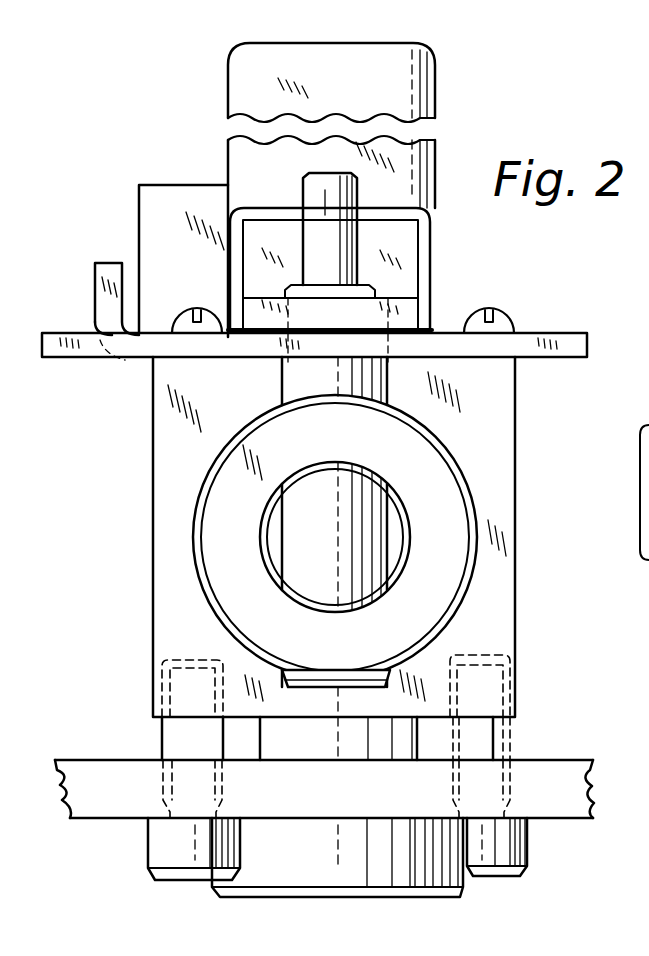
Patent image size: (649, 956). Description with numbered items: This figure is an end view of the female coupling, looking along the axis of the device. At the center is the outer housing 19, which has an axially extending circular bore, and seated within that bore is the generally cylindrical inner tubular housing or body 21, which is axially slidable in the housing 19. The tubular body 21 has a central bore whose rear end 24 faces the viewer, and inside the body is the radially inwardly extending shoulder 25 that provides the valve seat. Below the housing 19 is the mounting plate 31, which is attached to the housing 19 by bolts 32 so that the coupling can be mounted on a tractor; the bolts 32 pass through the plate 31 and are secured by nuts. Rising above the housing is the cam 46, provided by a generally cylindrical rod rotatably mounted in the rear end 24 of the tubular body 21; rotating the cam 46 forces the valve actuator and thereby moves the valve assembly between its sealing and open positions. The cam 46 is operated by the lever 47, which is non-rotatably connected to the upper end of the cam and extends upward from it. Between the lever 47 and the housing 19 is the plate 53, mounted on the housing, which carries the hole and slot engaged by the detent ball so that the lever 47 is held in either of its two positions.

The outer housing 19 is at (516, 396).
The inner tubular housing or body 21 is at (420, 588).
The rear end 24 is at (396, 520).
The shoulder 25 is at (322, 880).
The mounting plate 31 is at (622, 742).
The bolts 32 is at (150, 848).
The cam 46 is at (282, 380).
The lever 47 is at (418, 268).
The plate 53 is at (585, 303).